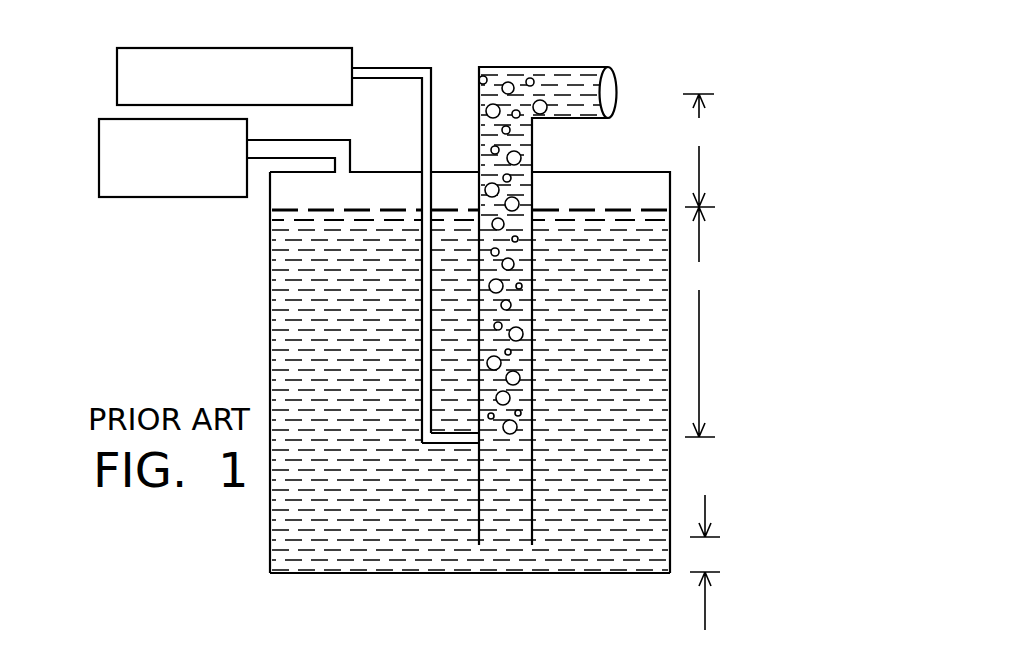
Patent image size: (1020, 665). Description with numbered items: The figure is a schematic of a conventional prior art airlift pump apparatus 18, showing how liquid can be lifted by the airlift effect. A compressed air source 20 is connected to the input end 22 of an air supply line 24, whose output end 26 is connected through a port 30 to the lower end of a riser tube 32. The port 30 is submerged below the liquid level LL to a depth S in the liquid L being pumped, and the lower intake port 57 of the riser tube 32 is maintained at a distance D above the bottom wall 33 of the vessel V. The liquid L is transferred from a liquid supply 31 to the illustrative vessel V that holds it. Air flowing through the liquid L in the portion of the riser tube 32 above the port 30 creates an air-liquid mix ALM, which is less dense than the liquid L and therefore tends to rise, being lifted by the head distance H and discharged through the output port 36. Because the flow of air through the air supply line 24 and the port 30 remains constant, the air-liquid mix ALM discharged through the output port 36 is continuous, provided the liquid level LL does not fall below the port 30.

The airlift pump apparatus 18 is at (546, 279).
The compressed air source 20 is at (117, 62).
The input end 22 is at (439, 241).
The air supply line 24 is at (439, 274).
The output end 26 is at (480, 450).
The port 30 is at (484, 437).
The liquid supply 31 is at (193, 197).
The riser tube 32 is at (520, 286).
The bottom wall 33 is at (420, 573).
The output port 36 is at (613, 90).
The lower intake port 57 is at (522, 536).
The vessel V is at (270, 313).
The liquid L is at (470, 400).
The liquid level LL is at (372, 208).
The air-liquid mix ALM is at (510, 148).
The head distance H is at (698, 150).
The depth S is at (700, 322).
The distance D is at (705, 562).